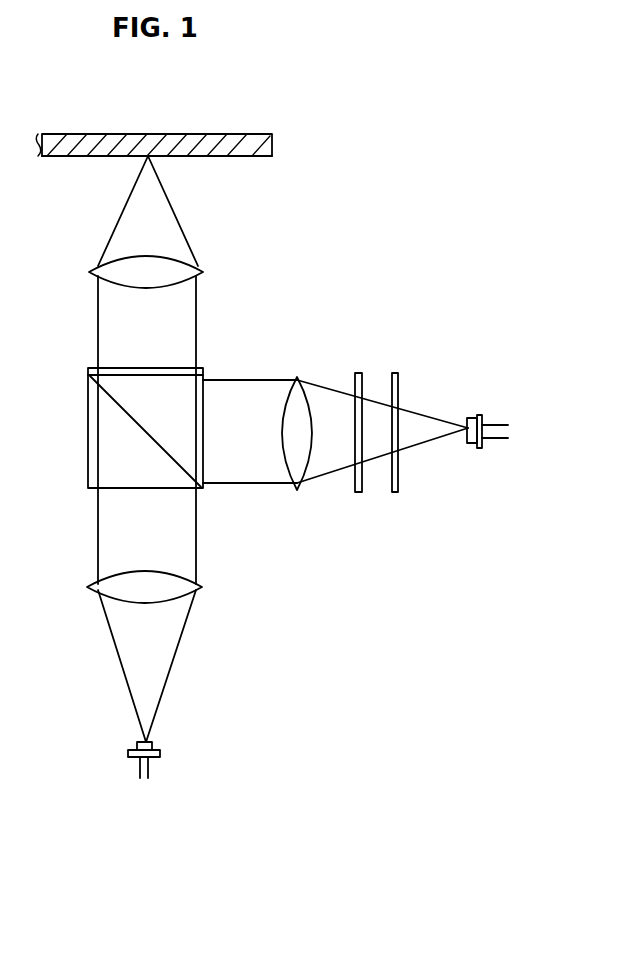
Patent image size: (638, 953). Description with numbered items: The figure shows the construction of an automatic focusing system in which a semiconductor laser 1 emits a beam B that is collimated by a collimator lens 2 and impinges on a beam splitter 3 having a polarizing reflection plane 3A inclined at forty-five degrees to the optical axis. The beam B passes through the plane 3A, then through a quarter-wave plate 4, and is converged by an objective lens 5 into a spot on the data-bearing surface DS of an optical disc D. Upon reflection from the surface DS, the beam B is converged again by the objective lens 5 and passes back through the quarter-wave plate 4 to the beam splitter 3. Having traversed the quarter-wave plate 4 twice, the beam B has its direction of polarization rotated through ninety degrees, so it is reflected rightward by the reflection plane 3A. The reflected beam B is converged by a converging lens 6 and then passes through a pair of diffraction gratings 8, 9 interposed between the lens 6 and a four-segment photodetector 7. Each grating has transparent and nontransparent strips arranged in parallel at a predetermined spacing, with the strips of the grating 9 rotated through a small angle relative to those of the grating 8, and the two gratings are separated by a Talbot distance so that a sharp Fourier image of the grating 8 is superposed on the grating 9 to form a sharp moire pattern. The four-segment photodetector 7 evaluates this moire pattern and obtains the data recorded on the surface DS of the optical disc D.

The semiconductor laser 1 is at (152, 745).
The collimator lens 2 is at (202, 589).
The beam splitter 3 is at (88, 481).
The polarizing reflection plane 3A is at (115, 398).
The quarter-wave plate 4 is at (88, 369).
The objective lens 5 is at (204, 270).
The converging lens 6 is at (297, 377).
The four-segment photodetector 7 is at (478, 415).
The diffraction grating 8 is at (358, 373).
The diffraction grating 9 is at (397, 373).
The beam B is at (173, 661).
The optical disc D is at (243, 140).
The data-bearing surface DS is at (236, 157).